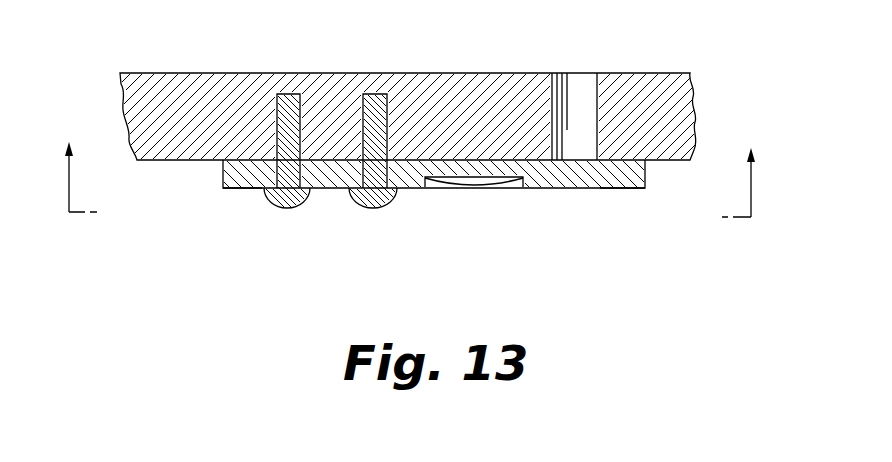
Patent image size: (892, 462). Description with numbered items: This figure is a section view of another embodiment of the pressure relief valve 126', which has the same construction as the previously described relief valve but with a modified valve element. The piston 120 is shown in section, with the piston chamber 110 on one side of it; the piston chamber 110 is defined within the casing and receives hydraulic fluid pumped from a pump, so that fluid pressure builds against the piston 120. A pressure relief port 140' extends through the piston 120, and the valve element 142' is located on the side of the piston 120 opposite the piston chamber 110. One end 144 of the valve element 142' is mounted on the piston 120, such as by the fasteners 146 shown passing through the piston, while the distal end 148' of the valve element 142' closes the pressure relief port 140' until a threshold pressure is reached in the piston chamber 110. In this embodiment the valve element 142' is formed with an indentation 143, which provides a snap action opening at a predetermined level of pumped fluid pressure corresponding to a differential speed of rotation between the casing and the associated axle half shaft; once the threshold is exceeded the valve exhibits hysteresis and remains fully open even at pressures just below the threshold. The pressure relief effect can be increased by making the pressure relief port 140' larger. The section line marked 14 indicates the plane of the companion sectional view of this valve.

The piston chamber 110 is at (372, 143).
The piston 120 is at (120, 96).
The pressure relief valve 126' is at (434, 223).
The pressure relief port 140' is at (540, 80).
The valve element 142' is at (474, 232).
The indentation 143 is at (517, 188).
The one end of valve element 144 is at (245, 188).
The fasteners 146 is at (293, 207).
The distal end of valve element 148' is at (655, 237).
The section line 14- 14 is at (409, 163).